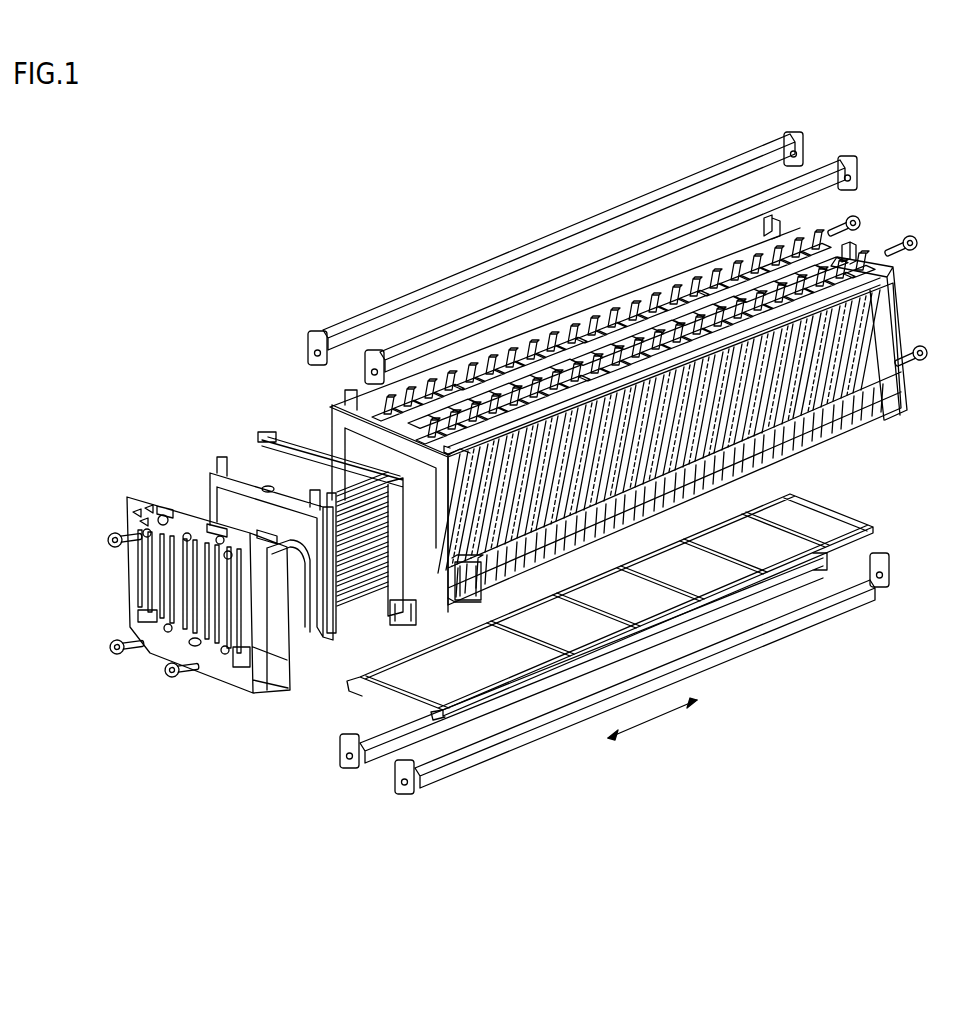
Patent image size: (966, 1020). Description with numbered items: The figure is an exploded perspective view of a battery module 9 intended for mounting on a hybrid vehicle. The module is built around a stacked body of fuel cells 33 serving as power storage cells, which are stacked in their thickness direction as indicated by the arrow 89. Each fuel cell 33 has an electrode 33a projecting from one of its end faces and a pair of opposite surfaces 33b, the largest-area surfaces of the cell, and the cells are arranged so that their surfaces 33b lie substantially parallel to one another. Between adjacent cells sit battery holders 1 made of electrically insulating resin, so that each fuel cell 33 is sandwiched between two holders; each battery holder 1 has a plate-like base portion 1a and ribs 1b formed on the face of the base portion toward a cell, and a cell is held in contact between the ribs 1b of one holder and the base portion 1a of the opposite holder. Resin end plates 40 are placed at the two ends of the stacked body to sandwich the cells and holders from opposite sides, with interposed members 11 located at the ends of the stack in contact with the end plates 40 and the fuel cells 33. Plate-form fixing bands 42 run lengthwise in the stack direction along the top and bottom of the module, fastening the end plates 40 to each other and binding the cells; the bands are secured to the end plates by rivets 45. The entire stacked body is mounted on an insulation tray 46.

The battery module 9 is at (829, 134).
The battery holder 1 is at (272, 432).
The base portion 1a is at (373, 572).
The ribs 1b is at (345, 577).
The interposed member 11 is at (291, 620).
The fuel cell 33 is at (336, 441).
The electrode 33a is at (768, 232).
The surface 33b is at (433, 550).
The end plate 40 is at (886, 325).
The fixing band 42 is at (408, 297).
The rivet 45 is at (917, 246).
The insulation tray 46 is at (842, 526).
The arrow 89 is at (657, 722).